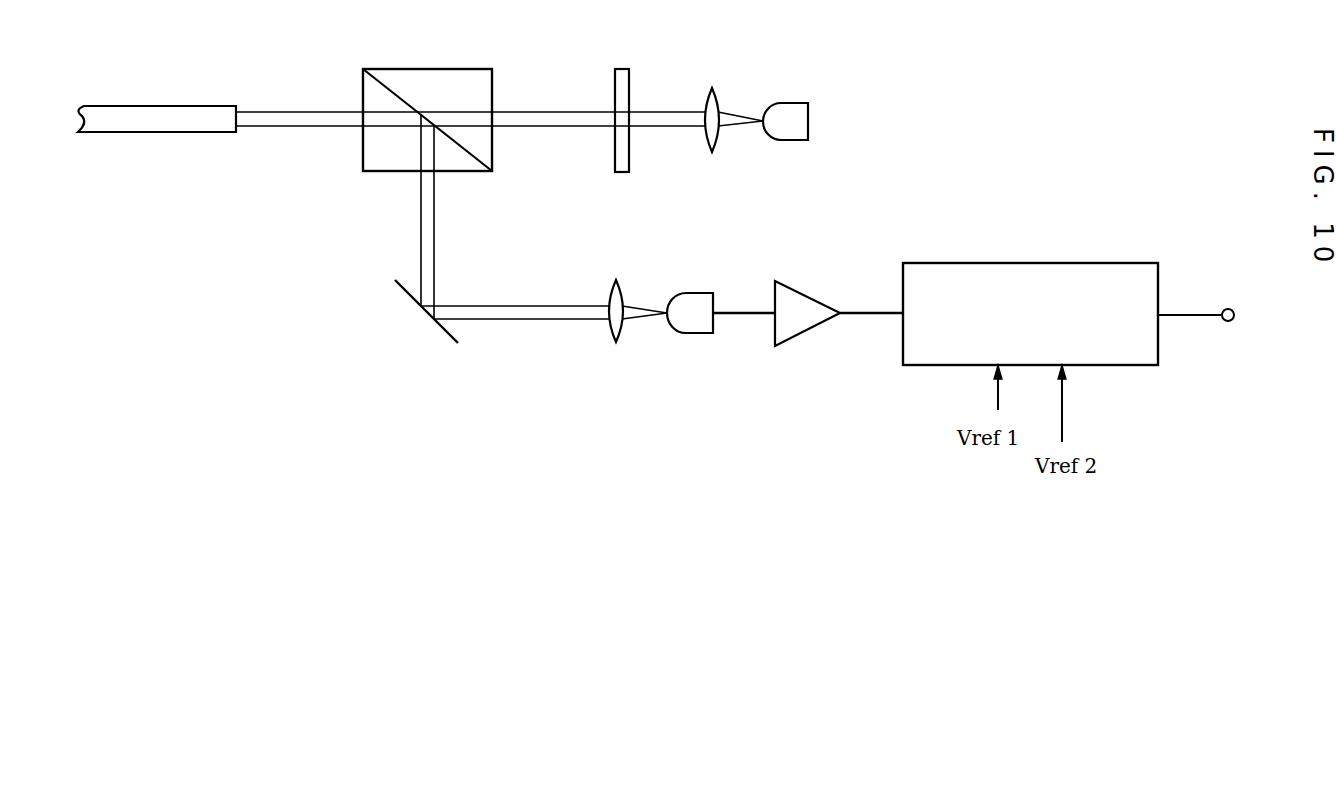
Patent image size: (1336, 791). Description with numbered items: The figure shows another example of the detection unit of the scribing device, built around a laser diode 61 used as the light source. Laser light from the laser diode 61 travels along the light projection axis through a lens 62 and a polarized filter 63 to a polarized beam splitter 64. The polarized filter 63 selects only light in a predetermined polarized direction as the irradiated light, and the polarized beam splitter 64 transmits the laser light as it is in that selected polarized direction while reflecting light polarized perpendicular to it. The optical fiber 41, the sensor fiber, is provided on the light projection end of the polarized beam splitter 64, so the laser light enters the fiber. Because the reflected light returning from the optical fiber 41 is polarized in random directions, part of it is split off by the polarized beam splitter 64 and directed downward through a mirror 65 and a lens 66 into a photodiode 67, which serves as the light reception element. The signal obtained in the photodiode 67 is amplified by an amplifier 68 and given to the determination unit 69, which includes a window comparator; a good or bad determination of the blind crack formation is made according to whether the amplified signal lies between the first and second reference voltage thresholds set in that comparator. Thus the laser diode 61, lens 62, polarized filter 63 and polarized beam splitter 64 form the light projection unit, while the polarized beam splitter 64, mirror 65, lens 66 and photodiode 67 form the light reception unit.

The optical fiber 41 is at (176, 106).
The laser diode 61 is at (769, 104).
The lens 62 is at (719, 92).
The polarized filter 63 is at (614, 81).
The polarized beam splitter 64 is at (421, 69).
The mirror 65 is at (442, 330).
The lens 66 is at (613, 343).
The photodiode 67 is at (680, 333).
The amplifier 68 is at (800, 292).
The determination unit 69 is at (958, 263).